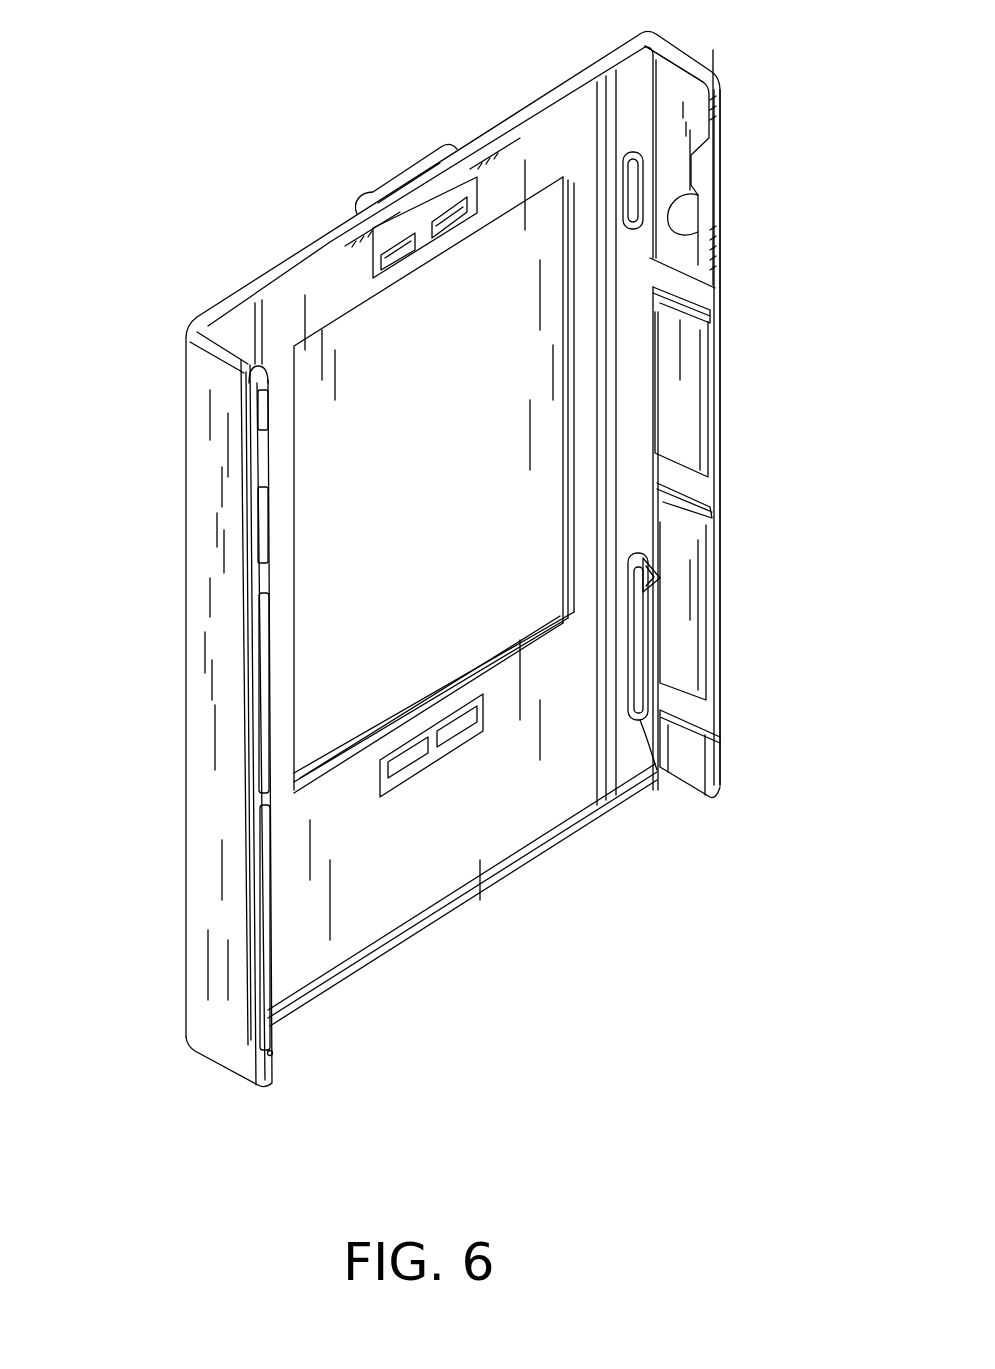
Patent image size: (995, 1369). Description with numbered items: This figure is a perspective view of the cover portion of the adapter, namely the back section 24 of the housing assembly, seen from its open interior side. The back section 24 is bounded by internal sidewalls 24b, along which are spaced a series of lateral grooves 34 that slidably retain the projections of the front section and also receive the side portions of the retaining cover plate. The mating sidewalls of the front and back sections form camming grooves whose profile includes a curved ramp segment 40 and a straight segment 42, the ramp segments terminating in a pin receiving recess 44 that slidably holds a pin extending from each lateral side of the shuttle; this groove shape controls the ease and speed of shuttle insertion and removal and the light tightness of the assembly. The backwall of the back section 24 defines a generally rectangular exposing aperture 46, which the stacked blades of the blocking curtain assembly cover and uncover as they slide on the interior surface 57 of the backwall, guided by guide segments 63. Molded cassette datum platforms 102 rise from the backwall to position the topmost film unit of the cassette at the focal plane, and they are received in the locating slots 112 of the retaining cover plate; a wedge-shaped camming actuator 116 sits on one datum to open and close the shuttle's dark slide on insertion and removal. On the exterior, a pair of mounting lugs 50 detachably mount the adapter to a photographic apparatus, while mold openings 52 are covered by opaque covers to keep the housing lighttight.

The back section 24 is at (176, 972).
The internal sidewall 24b is at (686, 357).
The lateral grooves 34 is at (721, 288).
The curved ramp segment 40 is at (698, 64).
The straight segment 42 is at (706, 114).
The pin receiving recess 44 is at (712, 243).
The exposing aperture 46 is at (408, 708).
The mounting lugs 50 is at (385, 200).
The mold openings 52 is at (453, 218).
The interior surface 57 is at (437, 848).
The guide segments 63 is at (596, 128).
The cassette datum platforms 102 is at (643, 175).
The lower locating slots 112 is at (661, 562).
The camming actuator 116 is at (641, 562).